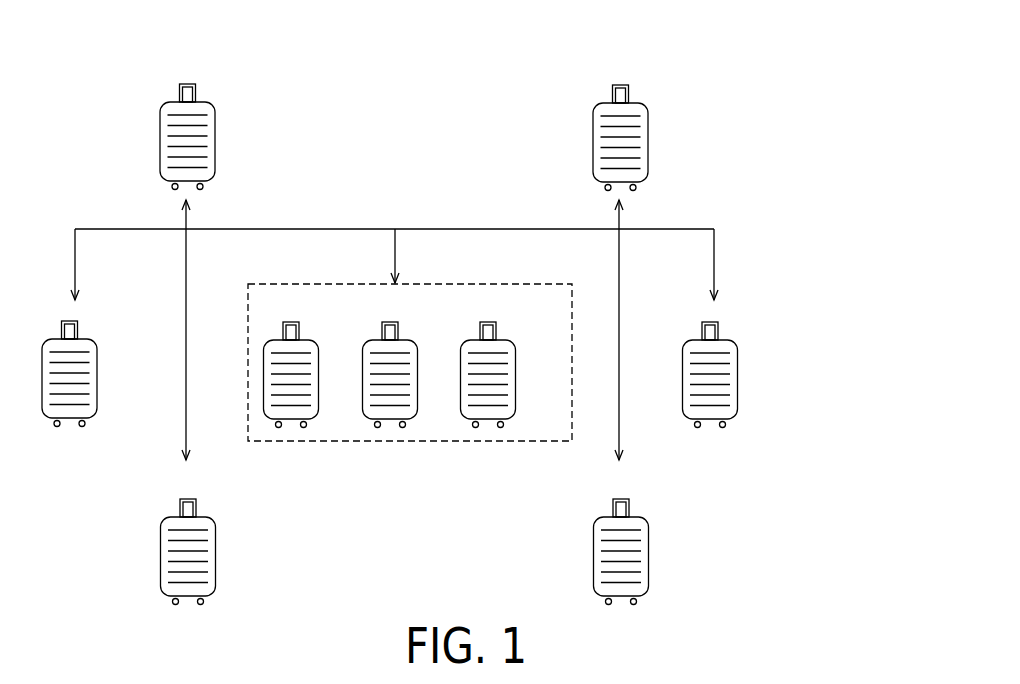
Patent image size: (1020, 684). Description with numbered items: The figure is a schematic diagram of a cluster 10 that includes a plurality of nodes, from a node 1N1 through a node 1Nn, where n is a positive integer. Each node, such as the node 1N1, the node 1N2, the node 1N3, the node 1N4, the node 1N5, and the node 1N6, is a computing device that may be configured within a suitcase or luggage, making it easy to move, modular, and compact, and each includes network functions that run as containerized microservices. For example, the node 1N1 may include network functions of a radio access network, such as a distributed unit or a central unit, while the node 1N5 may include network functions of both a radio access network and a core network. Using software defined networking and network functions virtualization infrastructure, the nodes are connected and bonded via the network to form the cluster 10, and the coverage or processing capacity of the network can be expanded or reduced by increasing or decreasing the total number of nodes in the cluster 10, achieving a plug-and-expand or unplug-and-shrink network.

The cluster 10 is at (757, 85).
The node 1N1 is at (238, 80).
The node 1N2 is at (671, 81).
The node 1N3 is at (121, 318).
The node 1N4 is at (315, 339).
The node 1N5 is at (414, 339).
The node 1N6 is at (512, 339).
The node 1Nn is at (671, 495).